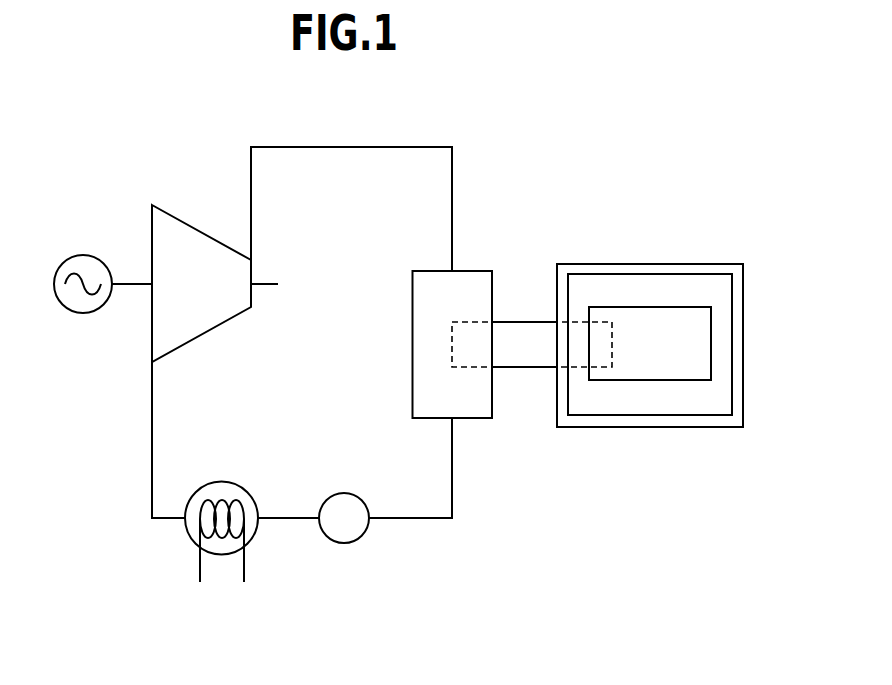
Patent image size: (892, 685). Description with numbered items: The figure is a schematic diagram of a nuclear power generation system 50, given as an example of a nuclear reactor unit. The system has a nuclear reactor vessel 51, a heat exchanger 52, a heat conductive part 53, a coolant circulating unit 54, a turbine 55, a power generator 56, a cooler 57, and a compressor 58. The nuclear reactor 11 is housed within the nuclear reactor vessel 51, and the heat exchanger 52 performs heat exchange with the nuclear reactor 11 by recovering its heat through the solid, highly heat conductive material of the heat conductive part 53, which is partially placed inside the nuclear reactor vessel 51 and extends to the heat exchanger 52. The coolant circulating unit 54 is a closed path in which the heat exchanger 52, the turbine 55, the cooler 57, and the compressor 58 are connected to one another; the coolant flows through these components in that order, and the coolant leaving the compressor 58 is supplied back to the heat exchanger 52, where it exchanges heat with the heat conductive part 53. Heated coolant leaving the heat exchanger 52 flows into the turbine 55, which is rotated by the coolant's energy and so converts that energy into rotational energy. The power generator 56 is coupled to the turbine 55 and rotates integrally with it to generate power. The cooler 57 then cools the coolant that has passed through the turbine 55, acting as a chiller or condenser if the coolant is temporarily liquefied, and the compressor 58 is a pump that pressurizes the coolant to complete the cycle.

The nuclear reactor 11 is at (648, 381).
The nuclear power generation system 50 is at (267, 117).
The nuclear reactor vessel 51 is at (631, 273).
The heat exchanger 52 is at (478, 270).
The heat conductive part 53 is at (522, 369).
The coolant circulating unit 54 is at (402, 146).
The turbine 55 is at (185, 222).
The power generator 56 is at (86, 255).
The cooler 57 is at (222, 481).
The compressor 58 is at (344, 493).